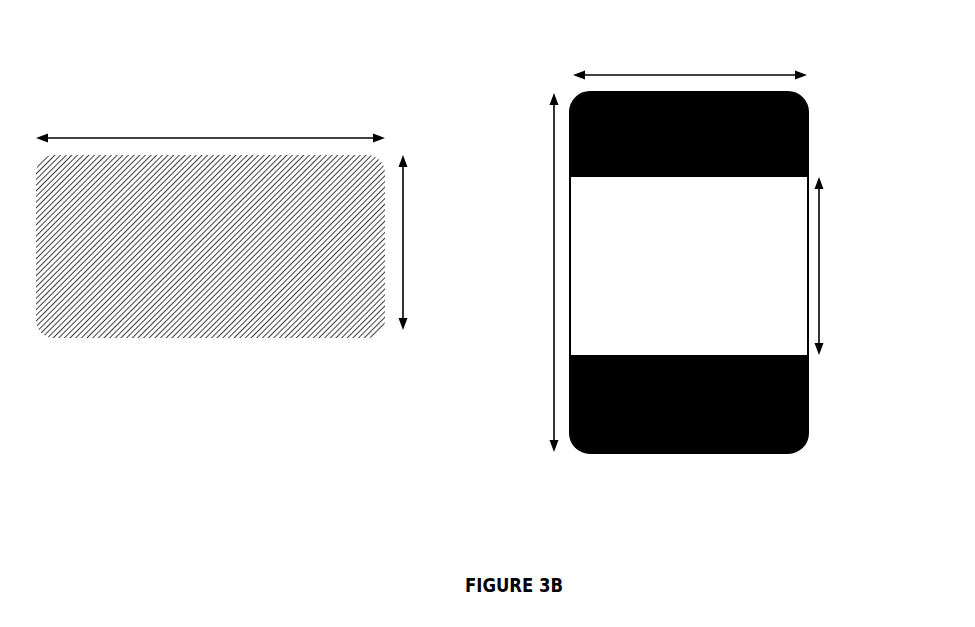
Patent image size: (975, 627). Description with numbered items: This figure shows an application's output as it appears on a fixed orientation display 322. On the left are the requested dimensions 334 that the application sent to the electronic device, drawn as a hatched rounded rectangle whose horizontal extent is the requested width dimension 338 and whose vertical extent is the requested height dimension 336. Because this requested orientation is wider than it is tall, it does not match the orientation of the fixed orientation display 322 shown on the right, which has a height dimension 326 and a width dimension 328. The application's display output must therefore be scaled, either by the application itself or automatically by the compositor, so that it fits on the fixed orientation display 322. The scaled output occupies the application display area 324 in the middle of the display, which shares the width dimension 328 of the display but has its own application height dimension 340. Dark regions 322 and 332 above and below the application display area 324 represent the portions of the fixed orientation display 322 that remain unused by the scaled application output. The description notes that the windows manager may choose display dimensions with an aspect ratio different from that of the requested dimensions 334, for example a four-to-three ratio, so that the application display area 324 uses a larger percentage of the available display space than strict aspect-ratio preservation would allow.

The requested dimensions 334 is at (105, 380).
The requested width dimension 338 is at (277, 137).
The requested height dimension 336 is at (403, 227).
The application display area 324 is at (689, 272).
The fixed orientation display 322 is at (809, 115).
The lower display region 332 is at (809, 420).
The width dimension 328 is at (760, 72).
The height dimension 326 is at (553, 308).
The application height dimension 340 is at (820, 272).